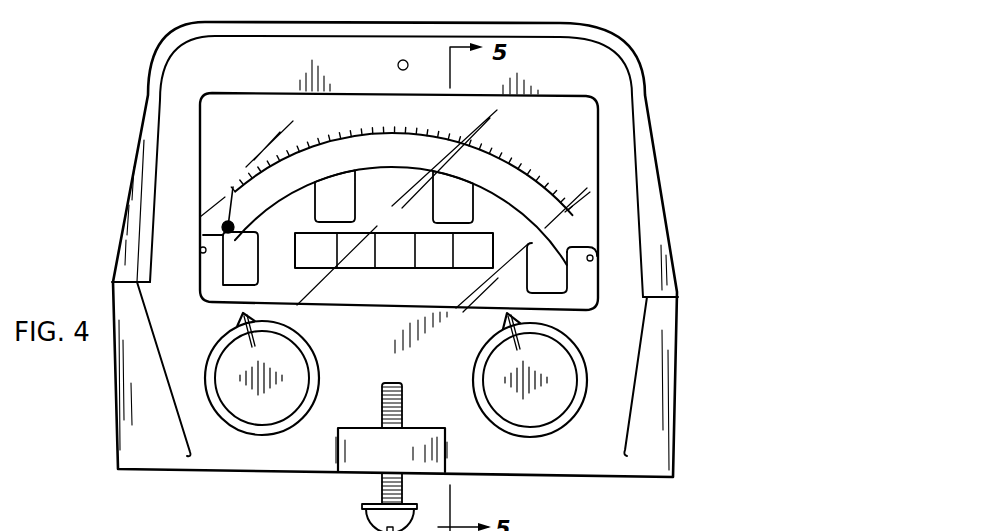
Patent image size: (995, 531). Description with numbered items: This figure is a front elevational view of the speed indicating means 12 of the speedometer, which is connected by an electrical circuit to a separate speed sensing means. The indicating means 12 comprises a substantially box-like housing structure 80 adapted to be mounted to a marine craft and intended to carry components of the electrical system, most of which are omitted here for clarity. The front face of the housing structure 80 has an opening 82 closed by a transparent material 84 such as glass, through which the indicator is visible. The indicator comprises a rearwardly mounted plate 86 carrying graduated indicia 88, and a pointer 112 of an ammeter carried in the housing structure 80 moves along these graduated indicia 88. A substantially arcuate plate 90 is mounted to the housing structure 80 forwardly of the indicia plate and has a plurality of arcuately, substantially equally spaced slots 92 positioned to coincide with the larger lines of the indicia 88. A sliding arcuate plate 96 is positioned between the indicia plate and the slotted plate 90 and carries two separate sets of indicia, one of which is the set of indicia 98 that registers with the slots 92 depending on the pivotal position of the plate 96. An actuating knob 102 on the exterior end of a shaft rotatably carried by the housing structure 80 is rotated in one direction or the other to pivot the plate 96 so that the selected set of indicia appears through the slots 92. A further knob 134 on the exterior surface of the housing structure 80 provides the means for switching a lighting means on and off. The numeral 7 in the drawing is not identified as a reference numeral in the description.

The speed indicating means 12 is at (675, 397).
The housing structure 80 is at (672, 337).
The opening 82 is at (203, 131).
The transparent material 84 is at (204, 104).
The rearwardly mounted plate 86 is at (556, 199).
The graduated indicia 88 is at (273, 164).
The arcuate plate 90 is at (367, 298).
The slots 92 is at (263, 233).
The arcuate plate 96 is at (350, 173).
The set of indicia 98 is at (254, 260).
The actuating knob 102 is at (548, 430).
The pointer 112 is at (232, 186).
The knob 134 is at (246, 428).
The mounting bolt 7 is at (380, 516).